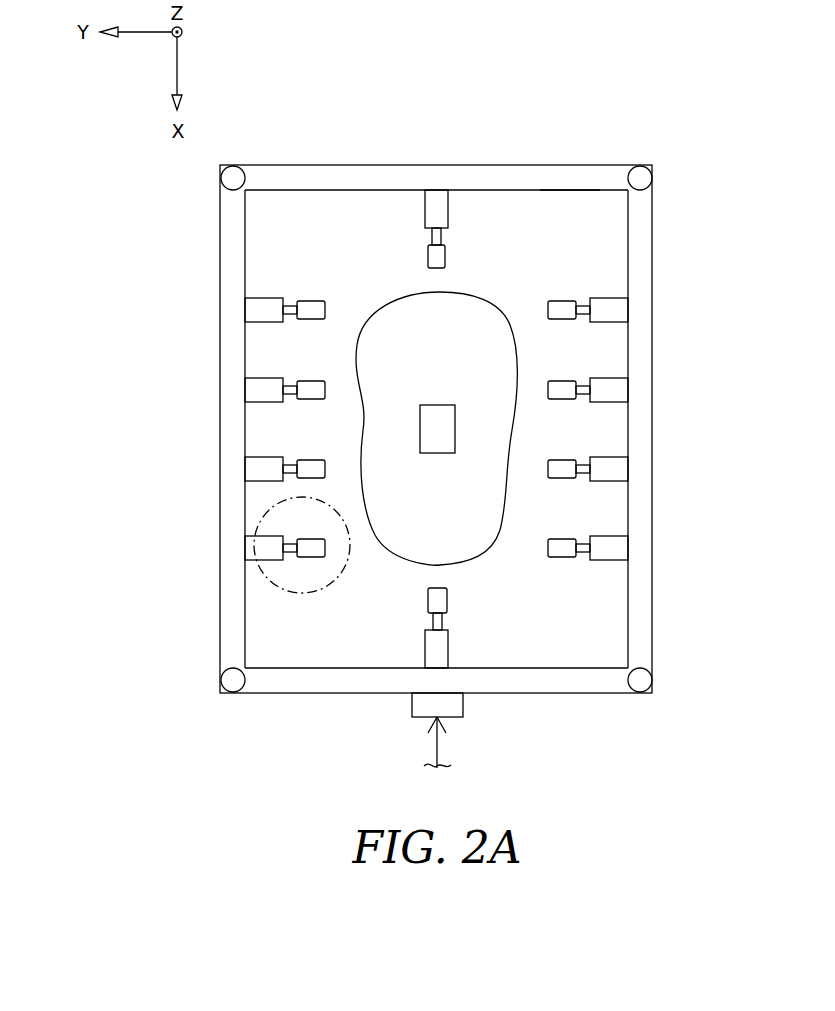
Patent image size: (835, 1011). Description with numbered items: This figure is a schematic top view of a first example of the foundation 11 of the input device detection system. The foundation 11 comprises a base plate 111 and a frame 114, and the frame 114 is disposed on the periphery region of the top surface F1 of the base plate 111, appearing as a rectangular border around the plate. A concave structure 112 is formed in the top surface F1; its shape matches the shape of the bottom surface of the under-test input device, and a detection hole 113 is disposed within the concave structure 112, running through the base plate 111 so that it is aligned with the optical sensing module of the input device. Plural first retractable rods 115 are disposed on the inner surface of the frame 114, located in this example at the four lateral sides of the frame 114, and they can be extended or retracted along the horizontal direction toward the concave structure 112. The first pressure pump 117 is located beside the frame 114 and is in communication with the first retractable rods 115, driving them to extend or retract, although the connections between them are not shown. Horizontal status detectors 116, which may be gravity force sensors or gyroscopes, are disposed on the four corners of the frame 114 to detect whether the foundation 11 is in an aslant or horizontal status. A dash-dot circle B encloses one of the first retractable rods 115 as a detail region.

The foundation 11 is at (476, 400).
The base plate 111 is at (302, 217).
The concave structure 112 is at (465, 347).
The detection hole 113 is at (433, 425).
The frame 114 is at (643, 352).
The first retractable rods 115 is at (437, 257).
The horizontal status detector 116 is at (637, 180).
The first pressure pump 117 is at (462, 703).
The detail region B is at (265, 505).
The top surface F1 is at (560, 227).